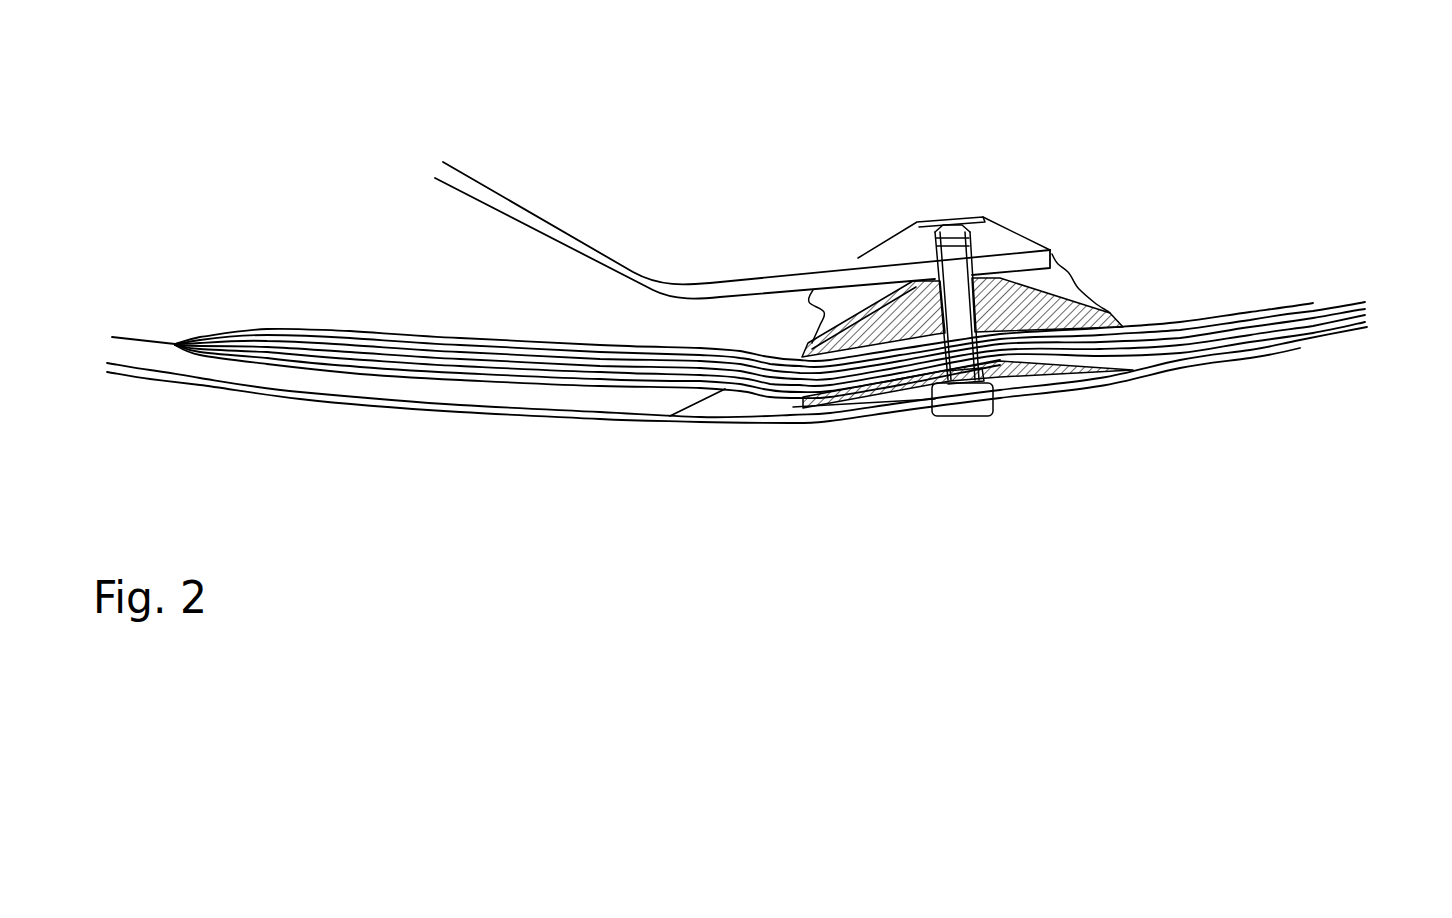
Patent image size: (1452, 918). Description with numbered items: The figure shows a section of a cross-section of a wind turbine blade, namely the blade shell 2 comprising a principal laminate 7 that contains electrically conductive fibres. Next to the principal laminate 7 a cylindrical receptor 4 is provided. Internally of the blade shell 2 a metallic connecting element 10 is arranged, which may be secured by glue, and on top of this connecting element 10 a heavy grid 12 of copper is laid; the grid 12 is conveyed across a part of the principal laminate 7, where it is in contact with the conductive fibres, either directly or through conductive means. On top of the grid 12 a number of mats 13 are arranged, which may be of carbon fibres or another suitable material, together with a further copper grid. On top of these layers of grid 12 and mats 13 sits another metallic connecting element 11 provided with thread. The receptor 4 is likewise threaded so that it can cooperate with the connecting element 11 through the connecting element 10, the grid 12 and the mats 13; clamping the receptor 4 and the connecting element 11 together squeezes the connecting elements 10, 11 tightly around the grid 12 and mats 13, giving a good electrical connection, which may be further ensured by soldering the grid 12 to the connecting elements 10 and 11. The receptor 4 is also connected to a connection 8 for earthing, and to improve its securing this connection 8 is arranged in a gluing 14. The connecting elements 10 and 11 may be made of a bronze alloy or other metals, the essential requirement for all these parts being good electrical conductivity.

The blade shell 2 is at (778, 379).
The cylindrical receptor 4 is at (963, 403).
The principal laminate 7 is at (398, 393).
The connection for earthing 8 is at (475, 188).
The metallic connecting element 10 is at (882, 393).
The threaded metallic connecting element 11 is at (1097, 307).
The grid of copper 12 is at (256, 335).
The mats 13 is at (320, 345).
The gluing 14 is at (858, 305).